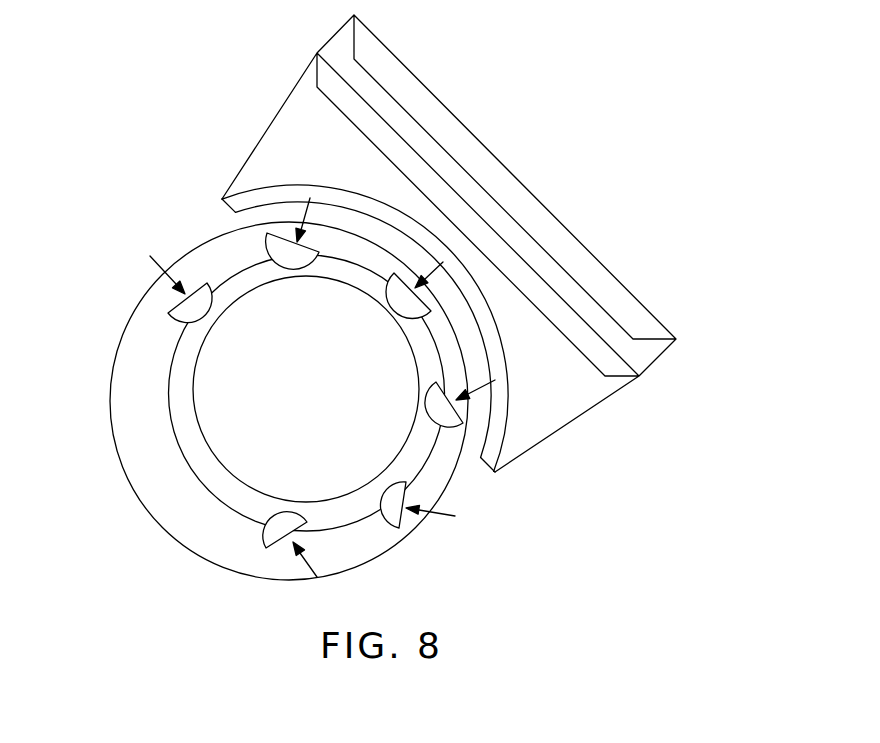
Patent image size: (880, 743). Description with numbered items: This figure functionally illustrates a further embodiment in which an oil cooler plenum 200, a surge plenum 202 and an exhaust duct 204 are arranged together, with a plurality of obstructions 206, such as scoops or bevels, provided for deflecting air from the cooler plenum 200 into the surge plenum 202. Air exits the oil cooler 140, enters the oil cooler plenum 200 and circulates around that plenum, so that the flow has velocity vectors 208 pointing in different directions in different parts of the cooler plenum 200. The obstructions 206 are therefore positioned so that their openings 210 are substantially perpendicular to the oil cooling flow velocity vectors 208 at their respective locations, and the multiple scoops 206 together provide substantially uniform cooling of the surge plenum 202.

The oil cooler 140 is at (618, 255).
The oil cooler plenum 200 is at (153, 497).
The surge plenum 202 is at (176, 389).
The exhaust duct 204 is at (330, 401).
The obstructions 206 is at (207, 311).
The velocity vectors 208 is at (442, 517).
The openings 210 is at (398, 309).